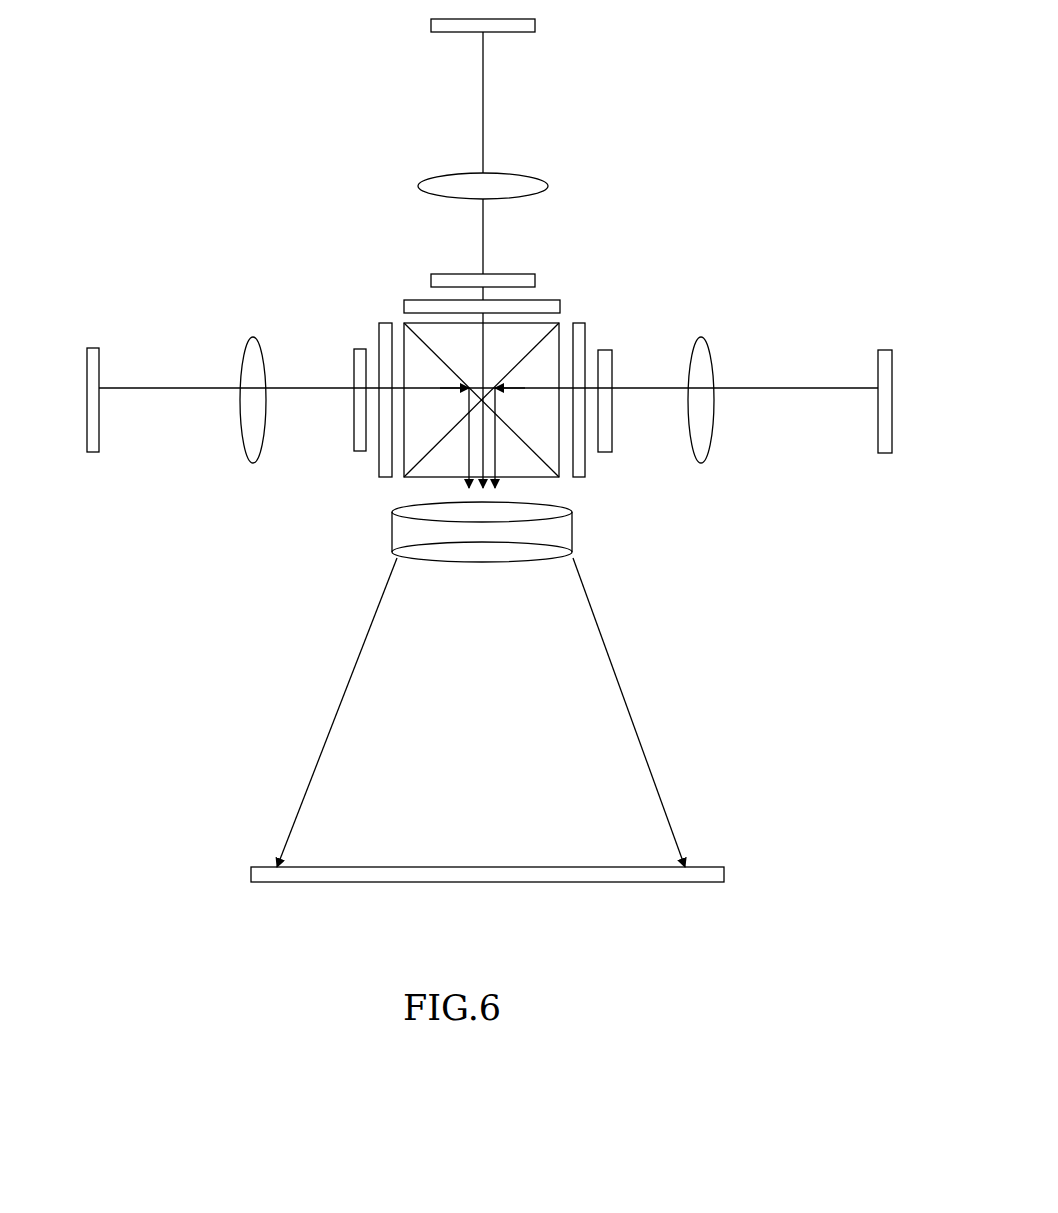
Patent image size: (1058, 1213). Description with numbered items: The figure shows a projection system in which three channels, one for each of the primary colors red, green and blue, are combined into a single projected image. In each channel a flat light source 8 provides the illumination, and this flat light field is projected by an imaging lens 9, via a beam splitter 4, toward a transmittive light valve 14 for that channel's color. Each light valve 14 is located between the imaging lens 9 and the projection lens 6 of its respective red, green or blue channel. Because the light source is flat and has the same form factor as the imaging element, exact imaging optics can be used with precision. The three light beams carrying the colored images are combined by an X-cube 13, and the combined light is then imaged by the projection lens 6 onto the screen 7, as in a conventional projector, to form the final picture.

The beam splitter 4 is at (354, 360).
The projection lens 6 is at (390, 512).
The screen 7 is at (340, 867).
The flat light source 8 is at (87, 348).
The imaging lens 9 is at (250, 337).
The X-cube 13 is at (535, 413).
The transmittive light valve 14 is at (380, 332).